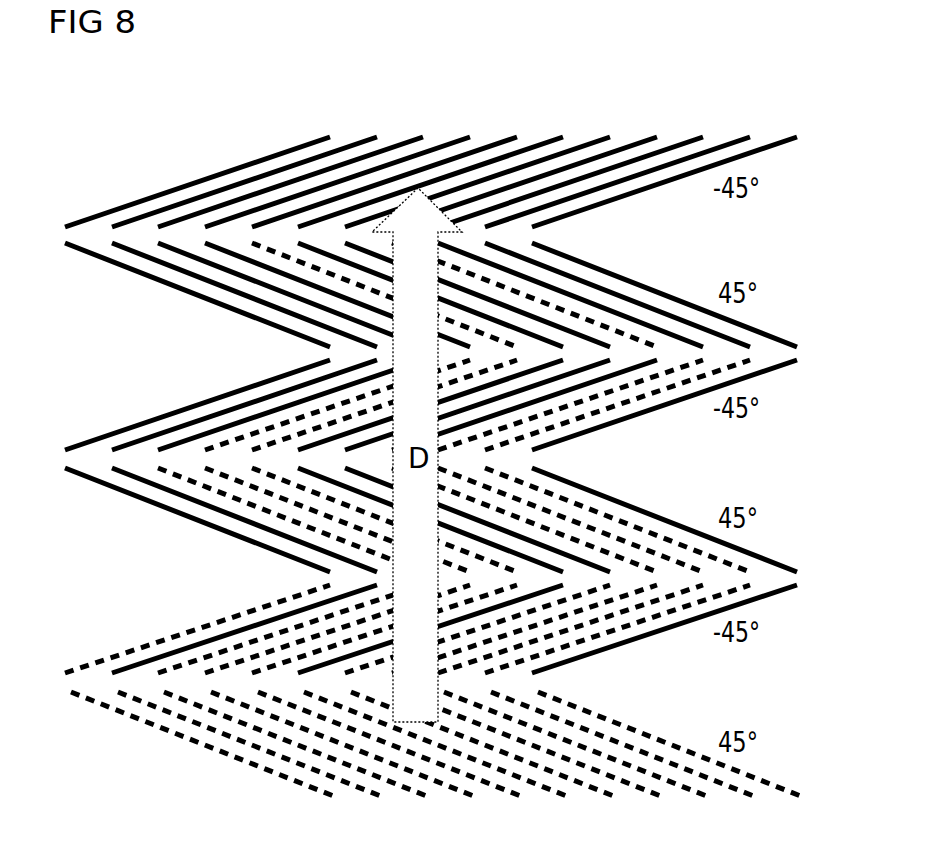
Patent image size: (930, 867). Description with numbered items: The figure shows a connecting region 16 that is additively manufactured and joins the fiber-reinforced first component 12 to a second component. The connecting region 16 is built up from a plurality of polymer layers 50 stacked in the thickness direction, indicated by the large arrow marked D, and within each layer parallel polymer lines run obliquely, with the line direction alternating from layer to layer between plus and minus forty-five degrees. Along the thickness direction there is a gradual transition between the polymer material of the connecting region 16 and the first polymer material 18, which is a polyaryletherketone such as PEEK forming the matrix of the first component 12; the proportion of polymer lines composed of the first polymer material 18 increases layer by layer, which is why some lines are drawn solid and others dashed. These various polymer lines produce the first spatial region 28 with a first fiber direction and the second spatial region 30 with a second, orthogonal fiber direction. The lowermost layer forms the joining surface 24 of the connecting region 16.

The first component 12 is at (221, 131).
The connecting region 16 is at (89, 153).
The first polymer material 18 is at (153, 174).
The joining surface 24 is at (215, 796).
The first spatial region 28 is at (225, 374).
The second spatial region 30 is at (276, 533).
The polymer layers 50 is at (115, 287).